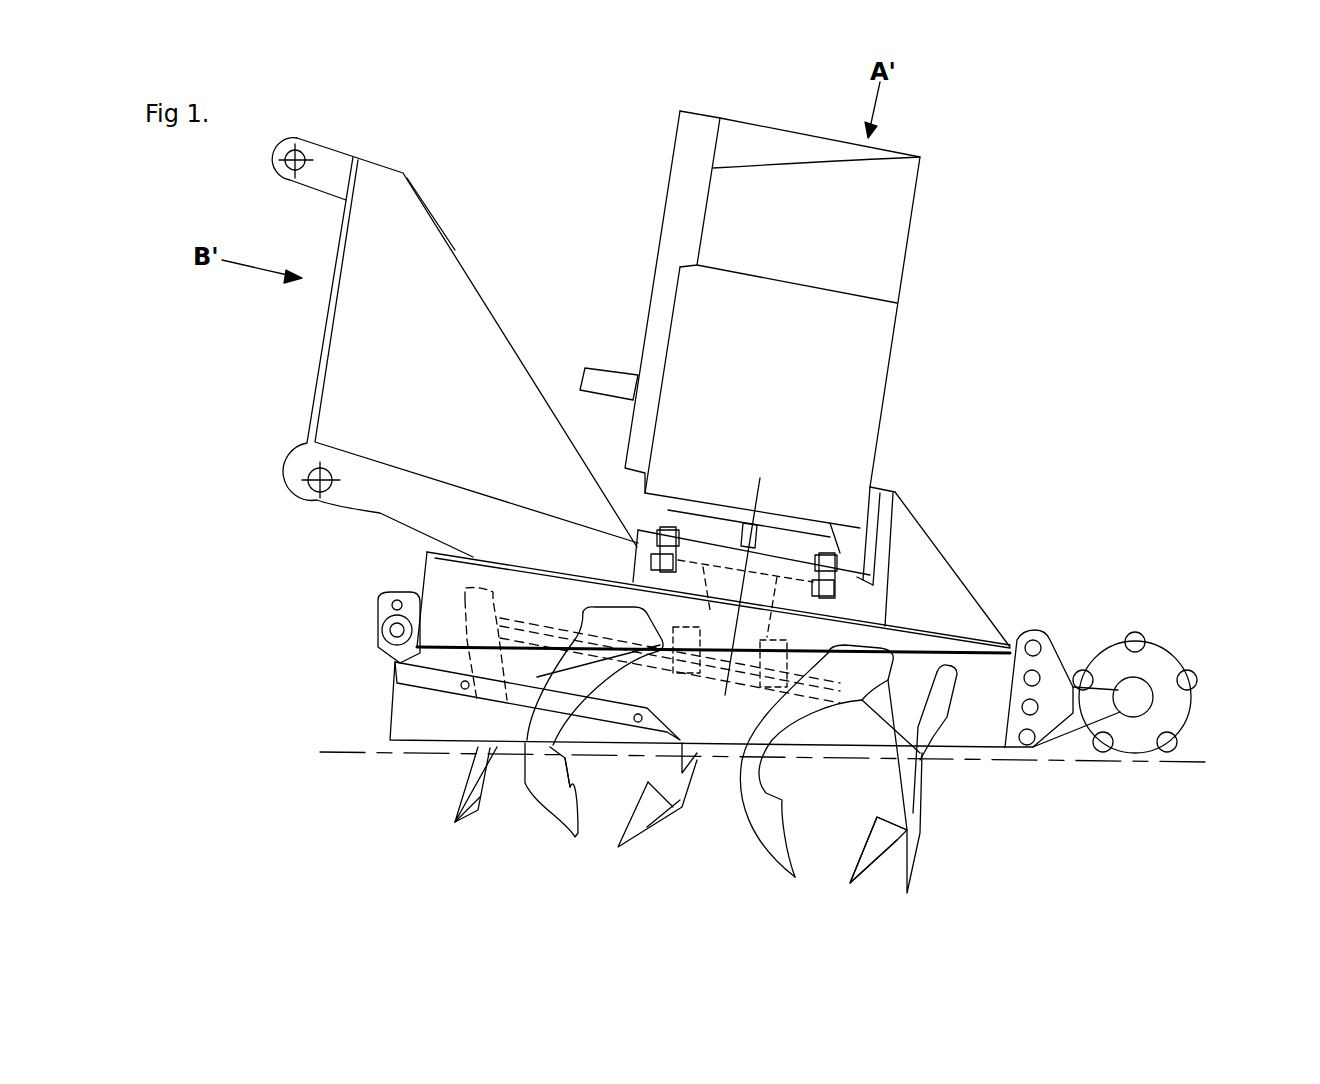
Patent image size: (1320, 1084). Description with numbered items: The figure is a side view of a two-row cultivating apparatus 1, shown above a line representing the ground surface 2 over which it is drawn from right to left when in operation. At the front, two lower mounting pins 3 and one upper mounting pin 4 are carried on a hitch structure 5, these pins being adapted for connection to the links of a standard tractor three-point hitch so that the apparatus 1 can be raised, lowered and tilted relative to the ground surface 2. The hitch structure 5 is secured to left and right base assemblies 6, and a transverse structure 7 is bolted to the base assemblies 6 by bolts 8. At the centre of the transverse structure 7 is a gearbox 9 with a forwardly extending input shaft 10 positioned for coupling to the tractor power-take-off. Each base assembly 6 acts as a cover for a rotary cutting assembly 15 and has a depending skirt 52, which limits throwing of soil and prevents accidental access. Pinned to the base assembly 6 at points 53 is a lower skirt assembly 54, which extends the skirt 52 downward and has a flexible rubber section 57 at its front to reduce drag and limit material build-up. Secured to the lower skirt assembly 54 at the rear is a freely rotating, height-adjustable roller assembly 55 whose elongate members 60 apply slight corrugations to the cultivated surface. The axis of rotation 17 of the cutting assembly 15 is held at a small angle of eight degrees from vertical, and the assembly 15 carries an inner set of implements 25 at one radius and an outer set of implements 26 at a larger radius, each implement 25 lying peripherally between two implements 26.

The cultivating apparatus 1 is at (1010, 255).
The ground surface 2 is at (360, 750).
The lower mounting pins 3 is at (310, 478).
The upper mounting pin 4 is at (283, 170).
The hitch structure 5 is at (403, 172).
The base assemblies 6 is at (952, 635).
The transverse structure 7 is at (880, 355).
The bolts 8 is at (840, 553).
The gearbox 9 is at (902, 212).
The input shaft 10 is at (603, 382).
The rotary cutting assembly 15 is at (932, 819).
The axis of rotation 17 is at (760, 487).
The implements 25 is at (643, 827).
The implements 26 is at (868, 862).
The skirt 52 is at (440, 573).
The points 53 is at (382, 630).
The lower skirt assembly 54 is at (962, 742).
The roller assembly 55 is at (1167, 667).
The flexible section 57 is at (420, 728).
The elongate members 60 is at (1192, 665).